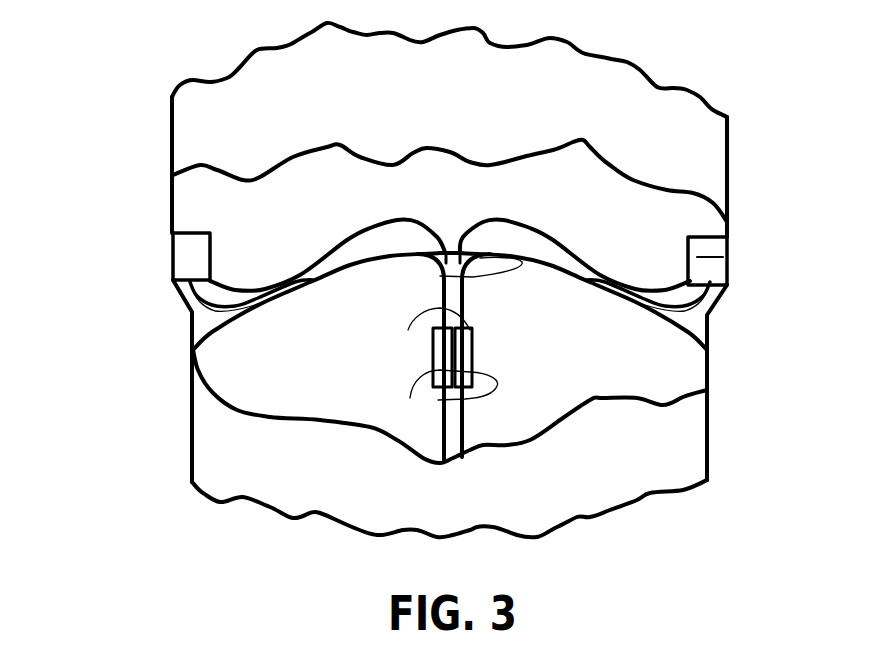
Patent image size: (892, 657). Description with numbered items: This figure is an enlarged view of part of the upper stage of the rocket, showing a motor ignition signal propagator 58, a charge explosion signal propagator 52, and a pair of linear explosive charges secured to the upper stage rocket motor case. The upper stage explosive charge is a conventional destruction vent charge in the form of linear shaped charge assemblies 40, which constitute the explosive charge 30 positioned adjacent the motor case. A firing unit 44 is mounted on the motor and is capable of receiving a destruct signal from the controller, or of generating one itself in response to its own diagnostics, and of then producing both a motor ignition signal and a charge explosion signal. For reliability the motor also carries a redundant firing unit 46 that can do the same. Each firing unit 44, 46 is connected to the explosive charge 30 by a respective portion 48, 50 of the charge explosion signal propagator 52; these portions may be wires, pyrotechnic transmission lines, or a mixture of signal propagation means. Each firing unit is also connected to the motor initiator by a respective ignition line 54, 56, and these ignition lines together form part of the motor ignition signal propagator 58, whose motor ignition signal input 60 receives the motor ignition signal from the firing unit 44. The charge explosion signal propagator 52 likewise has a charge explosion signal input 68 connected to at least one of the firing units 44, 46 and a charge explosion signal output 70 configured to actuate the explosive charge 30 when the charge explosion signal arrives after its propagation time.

The explosive charge 30 is at (470, 333).
The linear shaped charge assembly 40 is at (437, 400).
The firing unit 44 is at (193, 257).
The redundant firing unit 46 is at (688, 253).
The portion of charge explosion signal propagator 48 is at (432, 277).
The portion of charge explosion signal propagator 50 is at (480, 260).
The charge explosion signal propagator 52 is at (440, 276).
The ignition line 54 is at (348, 240).
The ignition line 56 is at (541, 240).
The motor ignition signal propagator 58 is at (415, 222).
The motor ignition signal input 60 is at (212, 281).
The charge explosion signal input 68 is at (173, 286).
The charge explosion signal output 70 is at (408, 330).